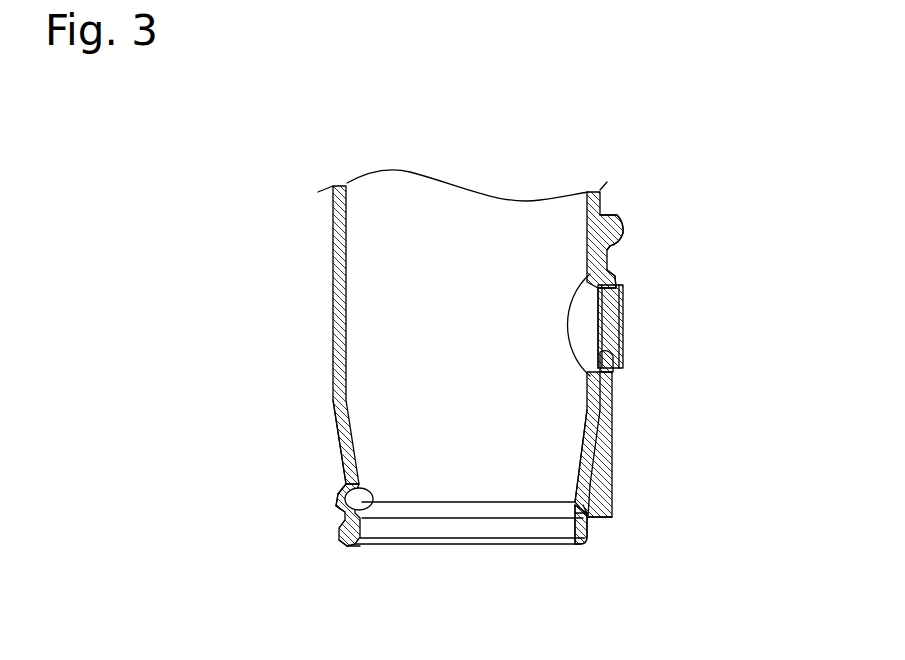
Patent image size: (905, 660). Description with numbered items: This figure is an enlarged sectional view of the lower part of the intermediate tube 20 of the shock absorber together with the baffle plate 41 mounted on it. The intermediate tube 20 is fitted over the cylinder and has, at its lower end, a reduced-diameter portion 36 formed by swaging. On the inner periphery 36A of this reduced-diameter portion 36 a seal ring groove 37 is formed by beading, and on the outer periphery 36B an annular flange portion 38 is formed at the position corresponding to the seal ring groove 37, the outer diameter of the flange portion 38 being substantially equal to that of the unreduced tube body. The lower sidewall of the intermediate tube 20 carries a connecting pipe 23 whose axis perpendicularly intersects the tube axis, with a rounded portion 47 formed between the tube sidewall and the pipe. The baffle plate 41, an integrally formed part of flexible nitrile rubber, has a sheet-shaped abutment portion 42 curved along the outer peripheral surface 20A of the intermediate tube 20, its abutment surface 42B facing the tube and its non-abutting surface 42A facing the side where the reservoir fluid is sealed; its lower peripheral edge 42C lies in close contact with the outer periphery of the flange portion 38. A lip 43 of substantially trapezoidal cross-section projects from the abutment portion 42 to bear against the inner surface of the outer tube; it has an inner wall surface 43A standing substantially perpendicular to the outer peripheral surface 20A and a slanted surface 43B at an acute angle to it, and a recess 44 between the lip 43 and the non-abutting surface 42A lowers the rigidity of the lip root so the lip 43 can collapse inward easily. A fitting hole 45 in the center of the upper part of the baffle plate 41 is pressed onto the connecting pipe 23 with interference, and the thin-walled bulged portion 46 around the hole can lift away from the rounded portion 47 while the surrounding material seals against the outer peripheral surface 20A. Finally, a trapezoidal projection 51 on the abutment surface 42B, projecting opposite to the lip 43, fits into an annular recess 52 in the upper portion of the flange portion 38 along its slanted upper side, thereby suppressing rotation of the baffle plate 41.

The intermediate tube 20 is at (397, 314).
The outer peripheral surface of the intermediate tube 20A is at (335, 290).
The connecting pipe 23 is at (625, 330).
The reduced-diameter portion 36 is at (288, 510).
The inner periphery of the reduced-diameter portion 36A is at (371, 540).
The outer periphery of the reduced-diameter portion 36B is at (342, 465).
The seal ring groove 37 is at (345, 487).
The annular flange portion 38 is at (338, 512).
The baffle plate 41 is at (672, 340).
The abutment portion 42 is at (673, 486).
The non-abutting surface 42A is at (610, 425).
The abutment surface 42B is at (608, 455).
The peripheral edge 42C is at (604, 519).
The lip 43 is at (681, 181).
The inner wall surface 43A is at (623, 242).
The slanted surface 43B is at (620, 238).
The recess 44 is at (625, 246).
The fitting hole 45 is at (625, 300).
The bulged portion 46 is at (618, 262).
The rounded portion 47 is at (625, 358).
The projection 51 is at (574, 487).
The annular recess 52 is at (608, 492).